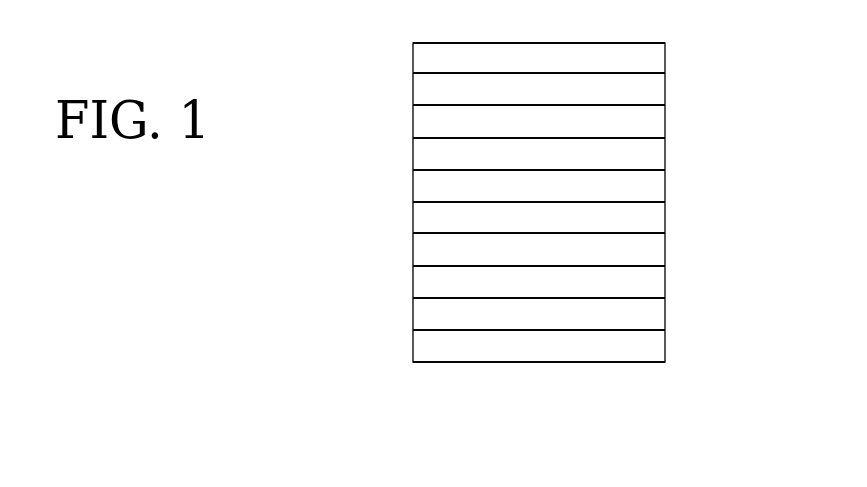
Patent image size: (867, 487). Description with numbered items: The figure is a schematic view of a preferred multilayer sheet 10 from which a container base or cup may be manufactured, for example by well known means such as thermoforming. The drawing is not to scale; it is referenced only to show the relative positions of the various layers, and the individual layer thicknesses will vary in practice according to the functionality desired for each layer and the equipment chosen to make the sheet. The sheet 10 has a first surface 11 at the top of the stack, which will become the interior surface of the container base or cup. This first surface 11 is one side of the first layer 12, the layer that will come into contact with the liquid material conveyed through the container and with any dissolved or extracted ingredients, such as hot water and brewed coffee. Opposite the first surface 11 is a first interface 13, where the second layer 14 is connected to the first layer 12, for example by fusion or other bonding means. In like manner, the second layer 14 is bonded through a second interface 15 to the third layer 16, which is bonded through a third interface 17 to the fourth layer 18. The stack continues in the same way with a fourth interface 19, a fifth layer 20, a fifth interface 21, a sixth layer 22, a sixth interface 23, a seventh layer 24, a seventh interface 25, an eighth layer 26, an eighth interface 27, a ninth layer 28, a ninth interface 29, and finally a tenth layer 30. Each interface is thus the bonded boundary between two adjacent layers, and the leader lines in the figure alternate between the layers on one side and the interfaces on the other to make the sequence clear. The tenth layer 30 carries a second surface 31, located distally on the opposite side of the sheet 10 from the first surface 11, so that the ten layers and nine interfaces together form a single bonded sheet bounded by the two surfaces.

The multilayer sheet 10 is at (236, 230).
The first surface 11 is at (540, 43).
The first layer 12 is at (645, 60).
The first interface 13 is at (433, 72).
The second layer 14 is at (645, 92).
The second interface 15 is at (433, 104).
The third layer 16 is at (645, 125).
The third interface 17 is at (433, 137).
The fourth layer 18 is at (645, 157).
The fourth interface 19 is at (433, 169).
The fifth layer 20 is at (645, 188).
The fifth interface 21 is at (433, 201).
The sixth layer 22 is at (645, 223).
The sixth interface 23 is at (433, 232).
The seventh layer 24 is at (645, 255).
The seventh interface 25 is at (433, 265).
The eighth layer 26 is at (645, 288).
The eighth interface 27 is at (433, 297).
The ninth layer 28 is at (645, 320).
The ninth interface 29 is at (433, 329).
The tenth layer 30 is at (645, 350).
The second surface 31 is at (541, 362).